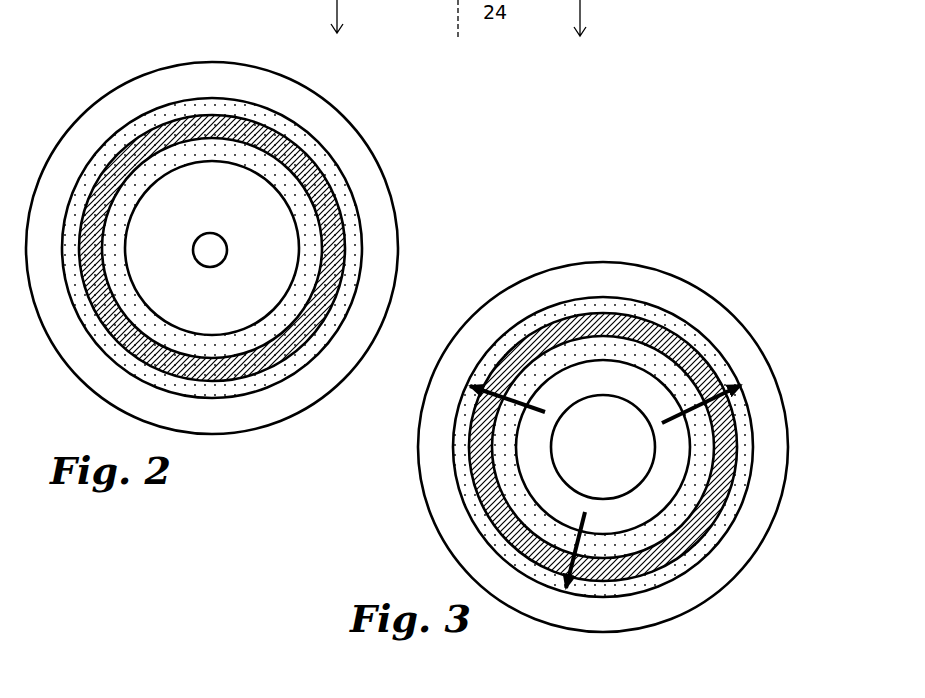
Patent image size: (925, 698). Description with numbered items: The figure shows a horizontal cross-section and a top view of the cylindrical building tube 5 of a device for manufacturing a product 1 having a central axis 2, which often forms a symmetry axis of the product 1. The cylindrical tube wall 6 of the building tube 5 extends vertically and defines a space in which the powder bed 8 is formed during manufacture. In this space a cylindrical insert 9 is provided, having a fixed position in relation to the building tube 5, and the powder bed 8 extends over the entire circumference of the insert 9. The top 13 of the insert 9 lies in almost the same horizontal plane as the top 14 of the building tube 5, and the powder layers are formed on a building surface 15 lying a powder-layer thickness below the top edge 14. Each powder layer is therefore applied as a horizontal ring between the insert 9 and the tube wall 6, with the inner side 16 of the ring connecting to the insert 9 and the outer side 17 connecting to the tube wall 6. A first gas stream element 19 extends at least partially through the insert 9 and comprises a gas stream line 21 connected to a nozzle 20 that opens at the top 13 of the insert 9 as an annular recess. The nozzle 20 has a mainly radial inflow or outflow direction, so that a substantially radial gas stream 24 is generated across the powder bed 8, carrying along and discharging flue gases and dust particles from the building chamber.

In FIG. 2, the product 1 is at (120, 360).
In FIG. 3, the product 1 is at (590, 296).
In FIG. 2, the central axis 2 is at (457, 10).
In FIG. 2, the building tube 5 is at (118, 110).
In FIG. 3, the building tube 5 is at (432, 494).
In FIG. 2, the tube wall 6 is at (256, 405).
In FIG. 3, the tube wall 6 is at (493, 338).
In FIG. 2, the powder bed 8 is at (320, 228).
In FIG. 3, the powder bed 8 is at (688, 330).
In FIG. 2, the insert 9 is at (220, 318).
In FIG. 3, the insert 9 is at (565, 438).
In FIG. 3, the top of the insert 13 is at (580, 448).
In FIG. 3, the top of the building tube 14 is at (715, 558).
In FIG. 3, the building surface 15 is at (657, 292).
In FIG. 3, the inner side of the ring shape 16 is at (670, 380).
In FIG. 3, the outer side of the ring shape 17 is at (510, 322).
In FIG. 2, the first gas stream element 19 is at (218, 246).
In FIG. 3, the nozzle 20 is at (559, 378).
In FIG. 2, the gas stream line 21 is at (208, 244).
In FIG. 3, the gas stream 24 is at (583, 543).